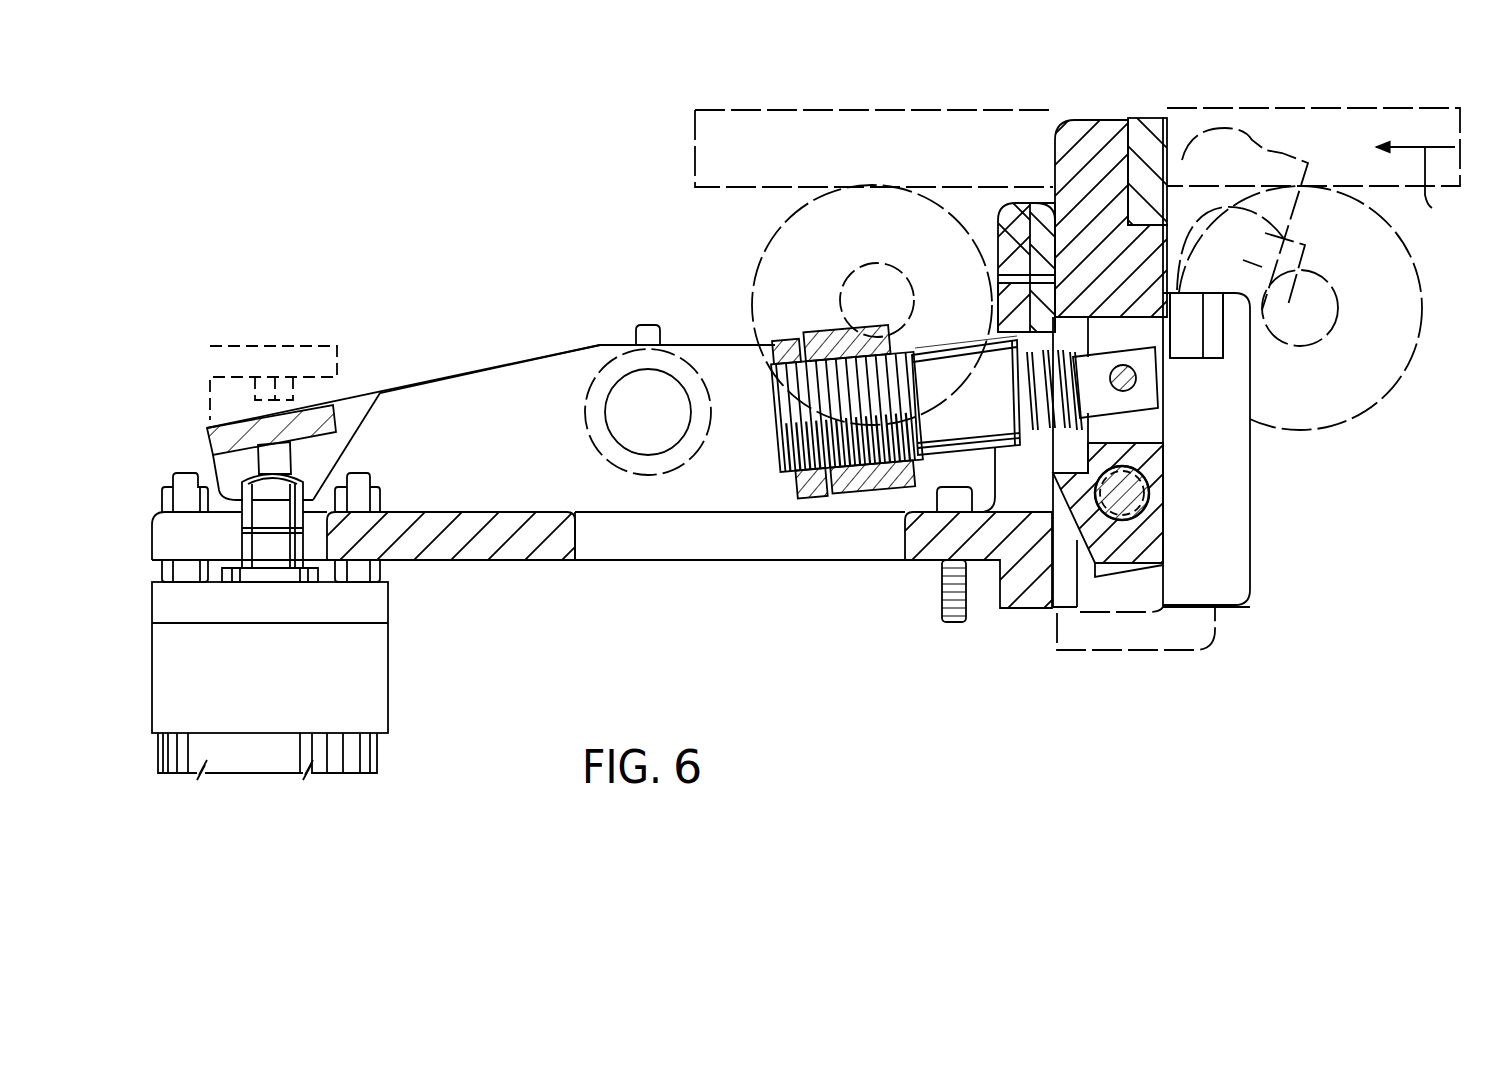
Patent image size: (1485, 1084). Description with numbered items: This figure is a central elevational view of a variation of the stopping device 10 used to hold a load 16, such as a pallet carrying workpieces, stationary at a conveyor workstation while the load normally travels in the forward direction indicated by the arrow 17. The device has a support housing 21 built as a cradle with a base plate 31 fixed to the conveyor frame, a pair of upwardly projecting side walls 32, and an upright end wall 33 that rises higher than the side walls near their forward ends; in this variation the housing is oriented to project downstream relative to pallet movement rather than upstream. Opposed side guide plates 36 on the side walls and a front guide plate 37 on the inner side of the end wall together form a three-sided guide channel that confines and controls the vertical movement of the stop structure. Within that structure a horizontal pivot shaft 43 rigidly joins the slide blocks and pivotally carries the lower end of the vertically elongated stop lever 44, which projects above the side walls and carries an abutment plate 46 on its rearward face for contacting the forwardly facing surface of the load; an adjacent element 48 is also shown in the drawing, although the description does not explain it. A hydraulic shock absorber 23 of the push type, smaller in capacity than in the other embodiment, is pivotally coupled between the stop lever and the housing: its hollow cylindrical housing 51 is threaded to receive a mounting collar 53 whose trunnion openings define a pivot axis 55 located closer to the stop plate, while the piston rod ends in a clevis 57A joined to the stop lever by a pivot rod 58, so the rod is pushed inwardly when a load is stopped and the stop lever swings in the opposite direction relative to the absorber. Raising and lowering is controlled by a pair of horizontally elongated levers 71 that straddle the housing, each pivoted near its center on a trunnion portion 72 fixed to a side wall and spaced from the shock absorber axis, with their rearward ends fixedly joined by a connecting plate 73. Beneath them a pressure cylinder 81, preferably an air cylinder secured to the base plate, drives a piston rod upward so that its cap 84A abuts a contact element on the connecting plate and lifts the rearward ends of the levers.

The stopping device 10 is at (432, 243).
The load 16 is at (1318, 117).
The forward movement direction arrow 17 is at (1421, 194).
The support housing 21 is at (526, 564).
The hydraulic shock absorber 23 is at (962, 342).
The base plate 31 is at (428, 540).
The side wall 32 is at (486, 388).
The upright end wall 33 is at (1003, 235).
The side guide plate 36 is at (1197, 313).
The front guide plate 37 is at (1030, 215).
The pivot shaft 43 is at (1135, 490).
The stop lever 44 is at (1090, 153).
The abutment plate 46 is at (1143, 140).
The spacer 48 is at (1045, 148).
The cylindrical housing 51 is at (916, 345).
The mounting collar 53 is at (833, 342).
The pivot axis 55 is at (858, 408).
The clevis 57A is at (1152, 398).
The pivot rod 58 is at (1135, 378).
The lever 71 is at (350, 408).
The trunnion portion 72 is at (662, 382).
The connecting plate 73 is at (210, 428).
The pressure cylinder 81 is at (370, 700).
The cap 84A is at (257, 515).